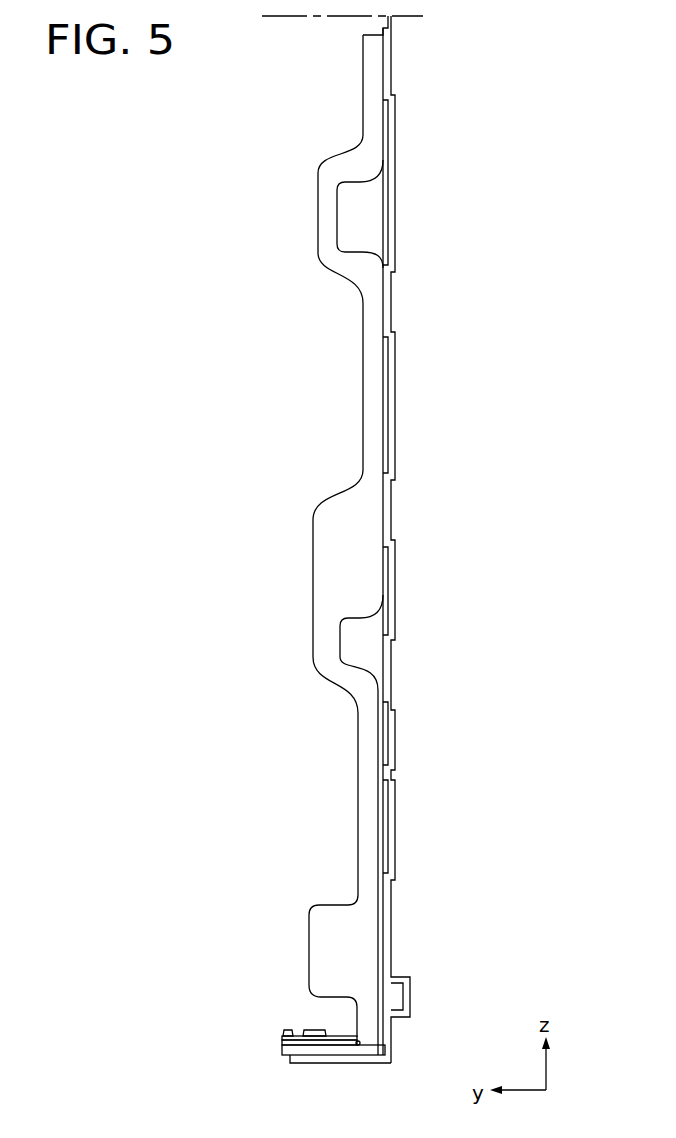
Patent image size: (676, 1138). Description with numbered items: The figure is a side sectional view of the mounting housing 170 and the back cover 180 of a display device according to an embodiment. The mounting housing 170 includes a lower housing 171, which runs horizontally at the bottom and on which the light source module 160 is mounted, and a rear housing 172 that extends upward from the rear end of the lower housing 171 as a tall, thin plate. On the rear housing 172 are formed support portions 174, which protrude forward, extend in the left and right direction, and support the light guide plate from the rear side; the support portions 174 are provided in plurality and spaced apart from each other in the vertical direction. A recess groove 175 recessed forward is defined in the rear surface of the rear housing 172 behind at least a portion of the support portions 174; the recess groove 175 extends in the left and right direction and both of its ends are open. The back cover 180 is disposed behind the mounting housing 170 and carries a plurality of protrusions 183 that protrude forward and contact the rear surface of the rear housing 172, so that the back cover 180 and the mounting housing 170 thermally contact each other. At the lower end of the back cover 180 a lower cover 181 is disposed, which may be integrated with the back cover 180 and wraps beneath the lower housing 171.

The light source module 160 is at (297, 1027).
The mounting housing 170 is at (305, 213).
The lower housing 171 is at (282, 1048).
The rear housing 172 is at (370, 815).
The support portion 174 is at (313, 566).
The recess groove 175 is at (337, 645).
The back cover 180 is at (403, 129).
The lower cover 181 is at (337, 1064).
The protrusions 183 is at (386, 740).